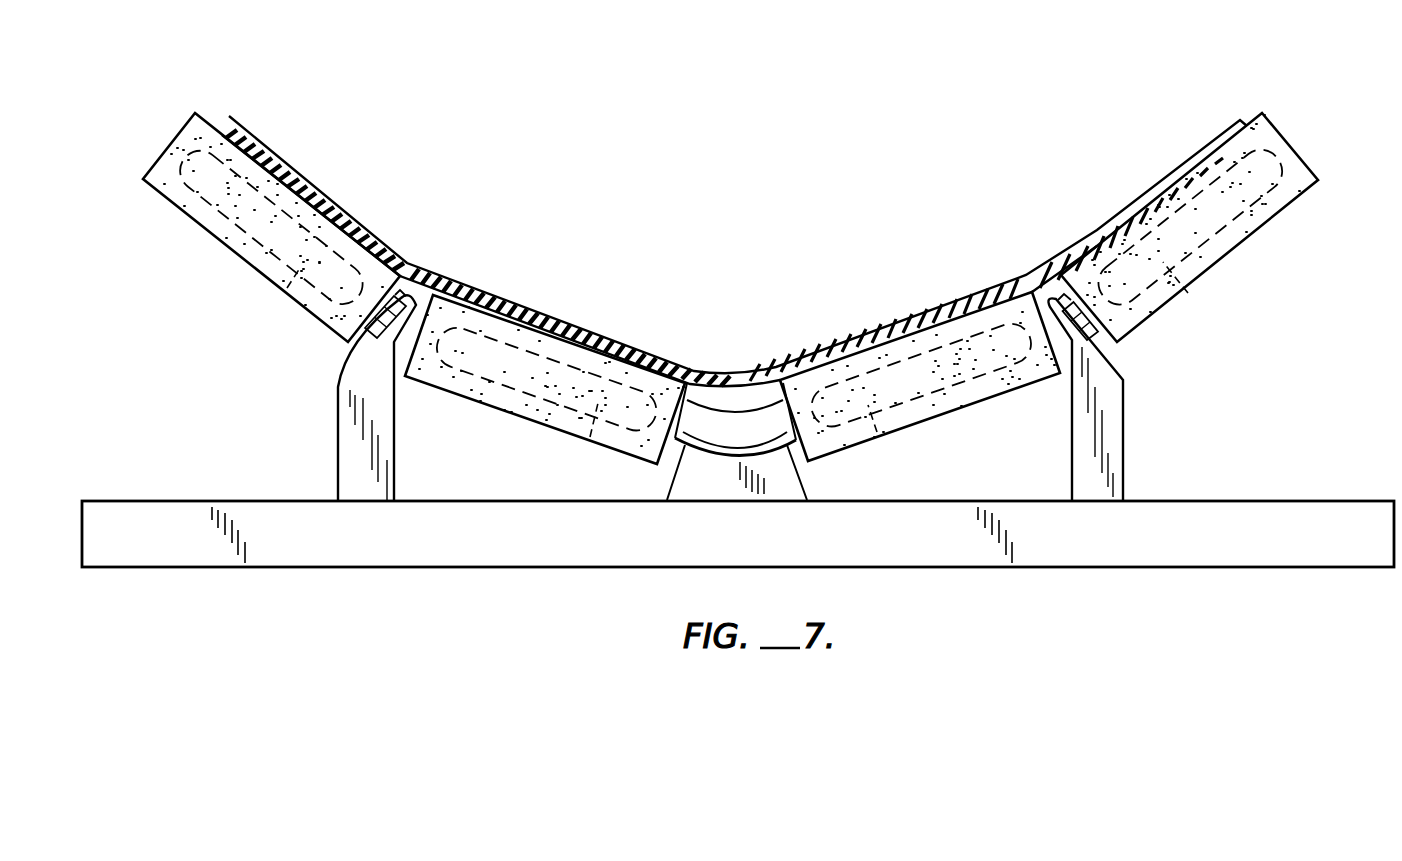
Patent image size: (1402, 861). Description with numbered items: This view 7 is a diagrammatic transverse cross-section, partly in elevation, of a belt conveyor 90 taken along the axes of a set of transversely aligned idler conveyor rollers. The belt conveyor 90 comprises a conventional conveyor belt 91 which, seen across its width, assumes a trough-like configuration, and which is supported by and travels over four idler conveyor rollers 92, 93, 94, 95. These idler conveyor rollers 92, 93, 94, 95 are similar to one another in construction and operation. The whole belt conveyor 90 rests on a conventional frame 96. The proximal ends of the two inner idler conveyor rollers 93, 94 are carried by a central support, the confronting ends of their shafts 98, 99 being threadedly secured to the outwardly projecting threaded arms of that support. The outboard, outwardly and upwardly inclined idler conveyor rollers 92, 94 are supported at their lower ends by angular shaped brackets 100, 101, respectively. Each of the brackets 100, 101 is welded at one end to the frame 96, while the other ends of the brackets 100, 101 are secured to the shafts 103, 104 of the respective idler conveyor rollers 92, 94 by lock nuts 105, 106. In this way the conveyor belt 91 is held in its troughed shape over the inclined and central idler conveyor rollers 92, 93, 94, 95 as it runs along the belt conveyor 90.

The diagrammatic transverse cross-sectional view 7 is at (629, 270).
The belt conveyor 90 is at (497, 108).
The conveyor belt 91 is at (288, 163).
The idler conveyor roller 92 is at (244, 242).
The idler conveyor roller 93 is at (497, 393).
The idler conveyor roller 94 is at (960, 398).
The idler conveyor roller 95 is at (1278, 195).
The frame 96 is at (1288, 520).
The shaft 98 is at (590, 437).
The shaft 99 is at (877, 432).
The angular shaped bracket 100 is at (350, 440).
The angular shaped bracket 101 is at (1108, 444).
The shaft 103 is at (287, 288).
The shaft 104 is at (1188, 293).
The lock nut 105 is at (373, 331).
The lock nut 106 is at (1092, 338).